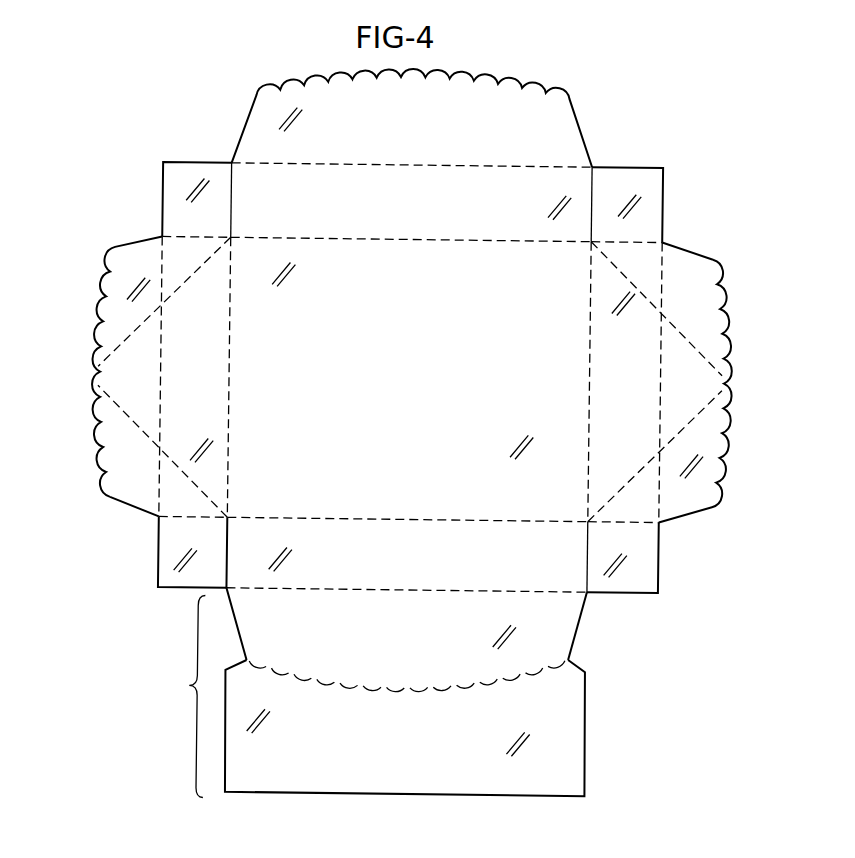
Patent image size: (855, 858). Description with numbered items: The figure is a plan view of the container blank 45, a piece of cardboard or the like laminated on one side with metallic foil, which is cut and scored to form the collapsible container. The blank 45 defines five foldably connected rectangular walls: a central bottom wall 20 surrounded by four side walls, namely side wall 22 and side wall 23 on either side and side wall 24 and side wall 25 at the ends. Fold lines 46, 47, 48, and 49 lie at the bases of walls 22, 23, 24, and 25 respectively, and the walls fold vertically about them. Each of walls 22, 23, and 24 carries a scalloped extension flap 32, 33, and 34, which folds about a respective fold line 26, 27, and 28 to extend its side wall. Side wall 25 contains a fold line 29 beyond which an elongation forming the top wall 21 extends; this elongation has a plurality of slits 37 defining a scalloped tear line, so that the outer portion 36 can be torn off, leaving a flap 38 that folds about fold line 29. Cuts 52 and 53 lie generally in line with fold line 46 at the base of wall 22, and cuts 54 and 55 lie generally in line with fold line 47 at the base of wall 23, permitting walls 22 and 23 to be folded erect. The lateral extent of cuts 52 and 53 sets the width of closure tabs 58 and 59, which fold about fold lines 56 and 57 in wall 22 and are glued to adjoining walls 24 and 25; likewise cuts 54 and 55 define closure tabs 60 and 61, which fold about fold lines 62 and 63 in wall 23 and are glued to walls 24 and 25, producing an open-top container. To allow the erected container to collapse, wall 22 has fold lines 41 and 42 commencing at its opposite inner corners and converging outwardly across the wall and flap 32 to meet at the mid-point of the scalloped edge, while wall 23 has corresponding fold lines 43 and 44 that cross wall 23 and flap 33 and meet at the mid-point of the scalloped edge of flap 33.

The bottom wall 20 is at (390, 386).
The top wall 21 is at (177, 696).
The side wall 22 is at (199, 373).
The side wall 23 is at (618, 396).
The side wall 24 is at (388, 222).
The side wall 25 is at (380, 572).
The fold line 26 is at (160, 420).
The fold line 27 is at (666, 295).
The fold line 28 is at (555, 165).
The fold line 29 is at (565, 595).
The extension flap 32 is at (129, 496).
The extension flap 33 is at (712, 321).
The extension flap 34 is at (529, 96).
The outer portion 36 is at (579, 740).
The slits 37 is at (519, 677).
The flap 38 is at (568, 640).
The fold line 41 is at (118, 411).
The fold line 42 is at (103, 351).
The fold line 43 is at (681, 426).
The fold line 44 is at (697, 352).
The container blank 45 is at (689, 120).
The fold line 46 is at (232, 422).
The fold line 47 is at (586, 358).
The fold line 48 is at (450, 240).
The fold line 49 is at (407, 518).
The cut 52 is at (230, 182).
The cut 53 is at (229, 567).
The cut 54 is at (593, 186).
The cut 55 is at (589, 548).
The fold line 56 is at (176, 238).
The fold line 57 is at (177, 521).
The closure tab 58 is at (170, 175).
The closure tab 59 is at (169, 560).
The closure tab 60 is at (650, 187).
The closure tab 61 is at (650, 574).
The fold line 62 is at (631, 239).
The fold line 63 is at (648, 532).